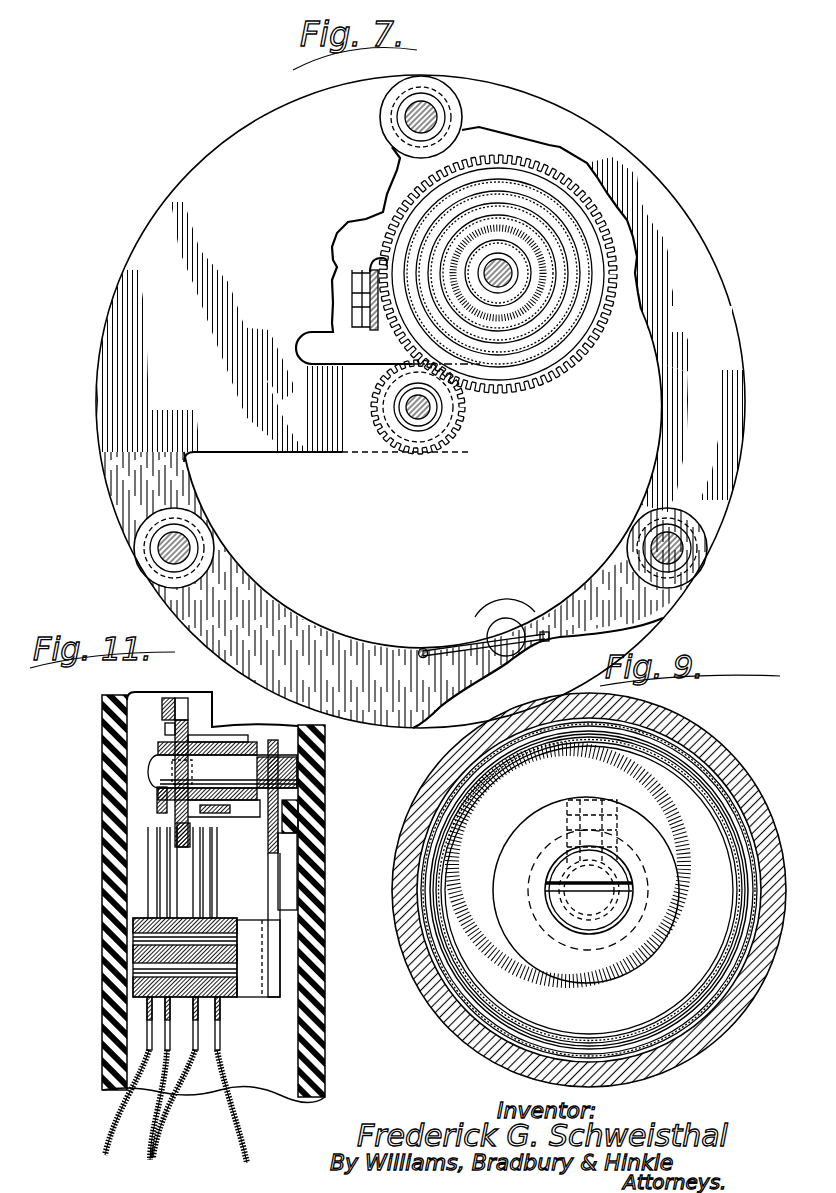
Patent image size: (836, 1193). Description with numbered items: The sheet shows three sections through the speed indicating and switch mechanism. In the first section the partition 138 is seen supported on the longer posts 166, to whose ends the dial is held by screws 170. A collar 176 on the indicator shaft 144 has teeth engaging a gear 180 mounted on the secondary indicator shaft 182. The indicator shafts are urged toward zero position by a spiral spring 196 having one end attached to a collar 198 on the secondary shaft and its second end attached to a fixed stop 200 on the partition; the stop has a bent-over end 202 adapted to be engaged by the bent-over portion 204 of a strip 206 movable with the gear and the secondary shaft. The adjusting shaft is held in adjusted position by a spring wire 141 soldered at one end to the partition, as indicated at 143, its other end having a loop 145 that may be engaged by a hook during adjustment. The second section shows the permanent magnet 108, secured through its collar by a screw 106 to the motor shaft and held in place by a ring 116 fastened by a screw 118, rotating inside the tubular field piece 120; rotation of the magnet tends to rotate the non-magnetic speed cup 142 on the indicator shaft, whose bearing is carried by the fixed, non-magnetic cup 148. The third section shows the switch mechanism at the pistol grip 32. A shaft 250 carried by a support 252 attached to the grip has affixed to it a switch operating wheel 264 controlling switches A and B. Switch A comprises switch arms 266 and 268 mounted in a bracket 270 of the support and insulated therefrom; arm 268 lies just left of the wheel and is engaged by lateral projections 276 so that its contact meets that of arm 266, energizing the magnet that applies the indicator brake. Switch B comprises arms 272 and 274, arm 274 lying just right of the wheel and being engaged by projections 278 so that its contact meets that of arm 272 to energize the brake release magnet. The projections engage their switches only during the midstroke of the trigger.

In FIG. 7, the partition 138 is at (150, 260).
In FIG. 7, the posts 166 is at (450, 107).
In FIG. 7, the screws 170 is at (157, 560).
In FIG. 7, the spiral spring 196 is at (590, 345).
In FIG. 7, the strip 206 is at (525, 401).
In FIG. 7, the bent-over portion 204 is at (553, 212).
In FIG. 7, the collar 198 is at (520, 280).
In FIG. 7, the secondary indicator shaft 182 is at (502, 273).
In FIG. 7, the bent-over end 202 is at (383, 258).
In FIG. 7, the fixed stop 200 is at (350, 297).
In FIG. 7, the gear 180 is at (507, 398).
In FIG. 7, the collar 176 is at (447, 432).
In FIG. 7, the indicator shaft 144 is at (403, 437).
In FIG. 7, the soldered end 143 is at (423, 648).
In FIG. 7, the spring wire 141 is at (503, 617).
In FIG. 7, the loop 145 is at (543, 617).
In FIG. 11, the pistol grip 32 is at (323, 830).
In FIG. 11, the switch operating wheel 264 is at (190, 722).
In FIG. 11, the lateral projections 276 is at (163, 713).
In FIG. 11, the shaft 250 is at (170, 768).
In FIG. 11, the support 252 is at (153, 802).
In FIG. 11, the switch arm 274 is at (272, 938).
In FIG. 11, the projections 278 is at (217, 820).
In FIG. 11, the switch A is at (153, 820).
In FIG. 11, the switch B is at (150, 853).
In FIG. 11, the switch arm 266 is at (147, 858).
In FIG. 11, the switch arm 268 is at (167, 878).
In FIG. 11, the switch arm 272 is at (217, 875).
In FIG. 11, the bracket 270 is at (133, 923).
In FIG. 9, the tubular field piece 120 is at (480, 1042).
In FIG. 9, the speed cup 142 is at (727, 813).
In FIG. 9, the fixed cup 148 is at (697, 780).
In FIG. 9, the permanent magnet 108 is at (495, 795).
In FIG. 9, the ring 116 is at (522, 923).
In FIG. 9, the screw 118 is at (597, 875).
In FIG. 9, the screw 106 is at (597, 800).